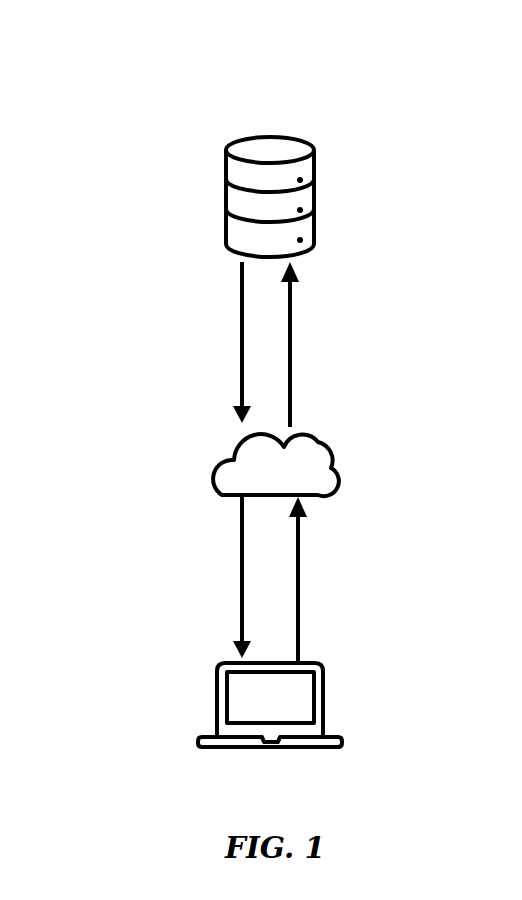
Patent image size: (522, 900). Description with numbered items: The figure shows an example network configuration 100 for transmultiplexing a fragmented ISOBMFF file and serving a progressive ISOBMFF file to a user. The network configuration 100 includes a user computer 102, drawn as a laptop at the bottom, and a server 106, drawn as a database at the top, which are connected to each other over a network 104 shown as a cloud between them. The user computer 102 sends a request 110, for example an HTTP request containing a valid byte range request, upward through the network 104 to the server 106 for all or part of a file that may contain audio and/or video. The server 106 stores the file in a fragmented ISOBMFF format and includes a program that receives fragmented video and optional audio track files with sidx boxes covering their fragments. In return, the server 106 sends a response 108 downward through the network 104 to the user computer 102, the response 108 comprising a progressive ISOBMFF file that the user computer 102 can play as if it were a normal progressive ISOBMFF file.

The network configuration 100 is at (92, 107).
The user computer 102 is at (217, 703).
The network 104 is at (205, 468).
The server 106 is at (225, 200).
The response 108 is at (223, 352).
The request 110 is at (310, 355).